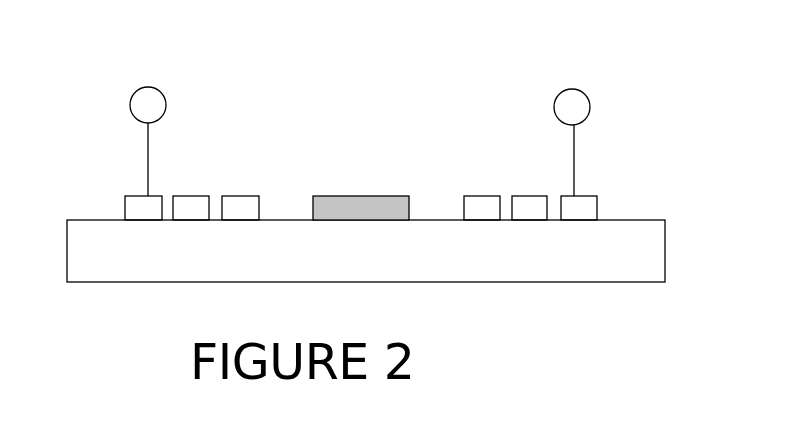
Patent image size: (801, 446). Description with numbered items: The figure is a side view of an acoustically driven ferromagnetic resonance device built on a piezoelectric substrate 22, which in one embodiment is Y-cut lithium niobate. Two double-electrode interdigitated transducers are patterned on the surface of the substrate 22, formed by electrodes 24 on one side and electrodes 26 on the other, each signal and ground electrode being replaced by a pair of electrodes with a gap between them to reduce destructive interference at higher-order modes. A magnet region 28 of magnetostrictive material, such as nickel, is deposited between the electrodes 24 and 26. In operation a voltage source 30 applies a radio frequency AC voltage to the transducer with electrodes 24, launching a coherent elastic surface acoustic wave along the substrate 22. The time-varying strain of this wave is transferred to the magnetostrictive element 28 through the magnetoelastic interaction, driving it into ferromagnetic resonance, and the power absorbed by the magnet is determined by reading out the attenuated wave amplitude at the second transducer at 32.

The substrate 22 is at (665, 243).
The electrode 24 is at (252, 195).
The electrode 26 is at (599, 202).
The magnet region 28 is at (372, 195).
The voltage source 30 is at (166, 94).
The second IDT readout 32 is at (589, 90).